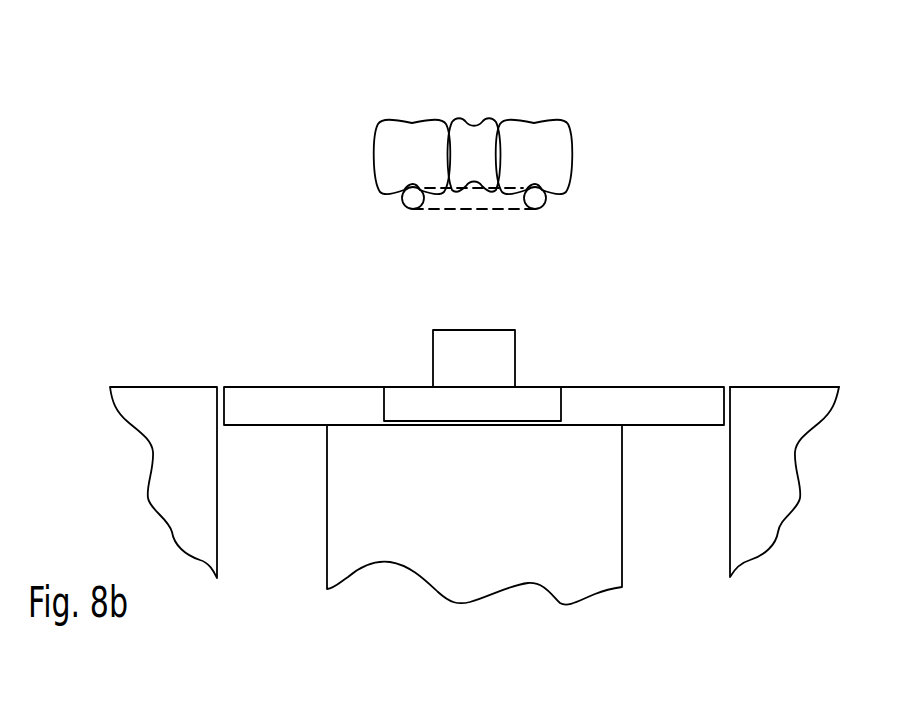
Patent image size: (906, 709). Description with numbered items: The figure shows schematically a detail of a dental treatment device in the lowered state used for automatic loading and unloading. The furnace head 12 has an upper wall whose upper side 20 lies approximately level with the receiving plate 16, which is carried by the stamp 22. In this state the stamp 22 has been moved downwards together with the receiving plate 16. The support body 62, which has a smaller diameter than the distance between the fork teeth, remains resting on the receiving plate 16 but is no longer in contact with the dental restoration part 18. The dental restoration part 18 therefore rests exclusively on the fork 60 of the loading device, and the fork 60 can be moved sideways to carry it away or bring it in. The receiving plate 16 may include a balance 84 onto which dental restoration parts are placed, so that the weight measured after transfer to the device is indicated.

The dental restoration part 18 is at (575, 105).
The fork 60 is at (415, 199).
The balance 84 is at (394, 385).
The support body 62 is at (500, 352).
The receiving plate 16 is at (681, 405).
The upper side 20 is at (777, 387).
The furnace head 12 is at (777, 488).
The stamp 22 is at (461, 570).